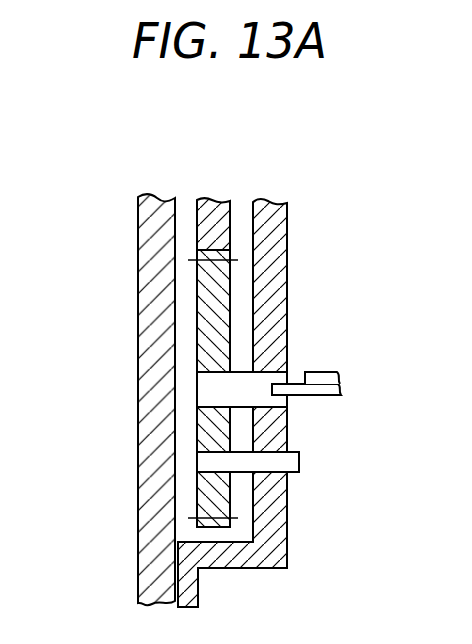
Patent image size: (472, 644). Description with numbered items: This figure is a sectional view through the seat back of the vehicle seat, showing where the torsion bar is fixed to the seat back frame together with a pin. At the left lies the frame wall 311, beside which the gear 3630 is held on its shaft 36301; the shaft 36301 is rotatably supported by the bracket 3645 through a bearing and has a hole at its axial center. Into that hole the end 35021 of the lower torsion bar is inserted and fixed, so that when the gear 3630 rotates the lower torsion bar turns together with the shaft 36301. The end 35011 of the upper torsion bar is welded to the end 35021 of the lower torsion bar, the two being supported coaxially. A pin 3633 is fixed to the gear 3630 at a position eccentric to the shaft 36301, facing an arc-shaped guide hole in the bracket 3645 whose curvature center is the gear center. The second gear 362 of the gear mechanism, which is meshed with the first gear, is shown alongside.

The housing wall 311 is at (147, 300).
The second gear 362 is at (220, 228).
The gear 3630 is at (216, 287).
The shaft 36301 is at (238, 380).
The end of the upper torsion bar 35011 is at (318, 376).
The end of the lower torsion bar 35021 is at (323, 395).
The pin 3633 is at (288, 462).
The bracket 3645 is at (270, 523).